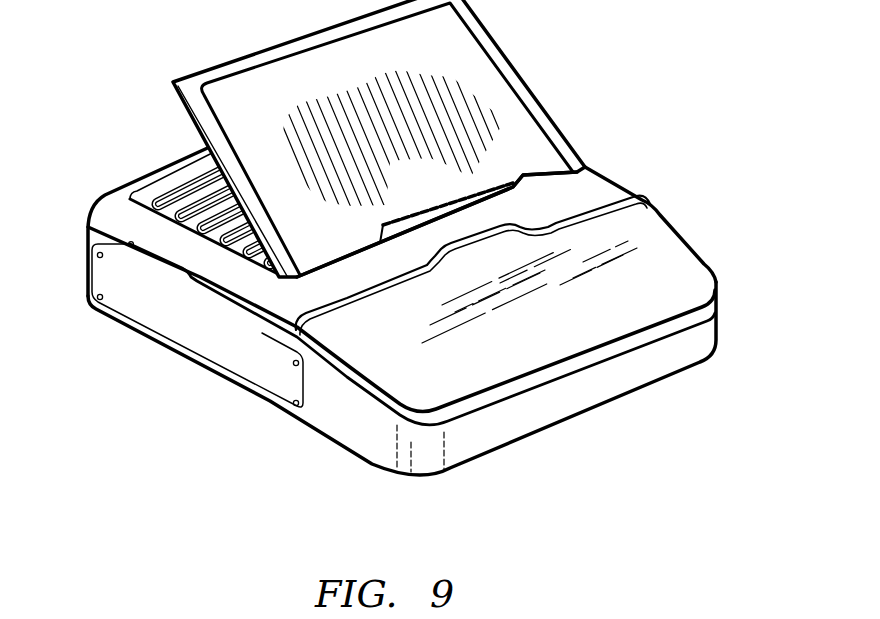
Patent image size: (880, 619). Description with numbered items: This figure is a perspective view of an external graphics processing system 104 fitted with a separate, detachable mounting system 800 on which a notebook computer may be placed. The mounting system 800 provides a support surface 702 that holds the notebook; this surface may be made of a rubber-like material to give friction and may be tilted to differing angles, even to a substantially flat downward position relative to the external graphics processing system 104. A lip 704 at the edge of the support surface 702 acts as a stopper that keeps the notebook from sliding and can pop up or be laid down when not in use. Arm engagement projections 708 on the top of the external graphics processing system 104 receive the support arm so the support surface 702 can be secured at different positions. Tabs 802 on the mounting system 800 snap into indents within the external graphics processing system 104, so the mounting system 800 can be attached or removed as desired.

The external graphics processing system 104 is at (718, 332).
The support surface 702 is at (503, 85).
The lip 704 is at (520, 178).
The arm engagement projections 708 is at (197, 192).
The mounting system 800 is at (240, 287).
The tabs 802 is at (129, 246).